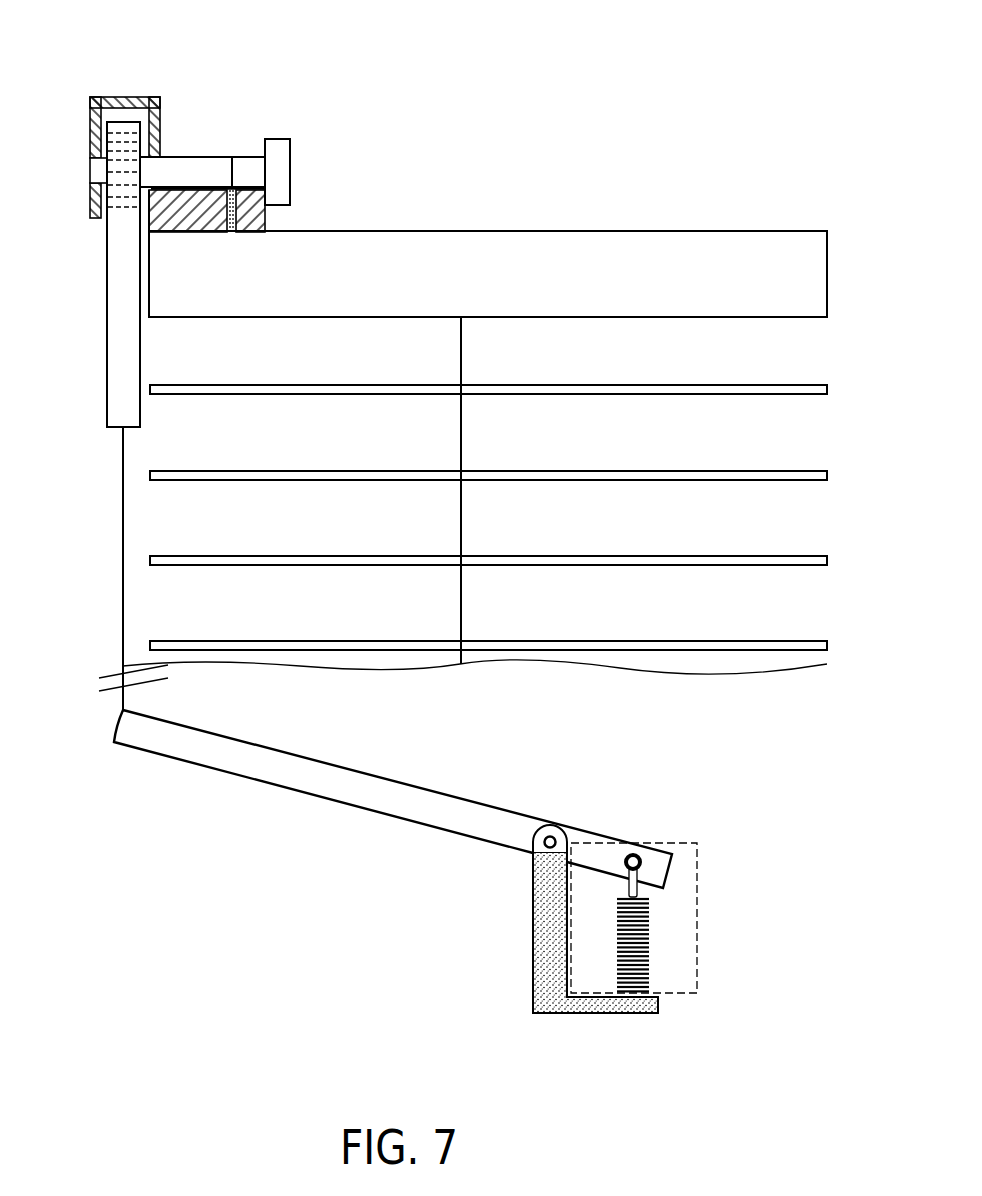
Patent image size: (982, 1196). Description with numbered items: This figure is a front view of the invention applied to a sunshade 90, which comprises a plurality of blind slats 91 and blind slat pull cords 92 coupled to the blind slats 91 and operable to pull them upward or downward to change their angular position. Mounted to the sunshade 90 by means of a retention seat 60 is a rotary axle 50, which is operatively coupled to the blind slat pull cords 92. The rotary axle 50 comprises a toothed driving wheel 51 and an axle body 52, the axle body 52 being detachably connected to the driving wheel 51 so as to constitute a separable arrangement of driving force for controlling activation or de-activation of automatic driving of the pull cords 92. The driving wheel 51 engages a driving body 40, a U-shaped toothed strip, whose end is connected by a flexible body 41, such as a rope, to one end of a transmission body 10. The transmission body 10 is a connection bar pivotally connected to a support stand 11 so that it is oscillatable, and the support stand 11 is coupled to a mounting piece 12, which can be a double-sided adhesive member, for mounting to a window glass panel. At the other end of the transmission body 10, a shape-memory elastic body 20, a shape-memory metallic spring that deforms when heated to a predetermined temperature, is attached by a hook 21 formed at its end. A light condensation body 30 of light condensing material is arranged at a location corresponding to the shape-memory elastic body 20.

The transmission body 10 is at (365, 773).
The support stand 11 is at (558, 835).
The mounting piece 12 is at (533, 957).
The shape-memory elastic body 20 is at (652, 938).
The hook 21 is at (660, 848).
The light condensation body 30 is at (680, 907).
The driving body 40 is at (113, 305).
The flexible body 41 is at (120, 482).
The rotary axle 50 is at (210, 157).
The driving wheel 51 is at (120, 207).
The axle body 52 is at (282, 145).
The retention seat 60 is at (97, 98).
The sunshade 90 is at (567, 230).
The blind slats 91 is at (675, 393).
The blind slat pull cords 92 is at (461, 357).